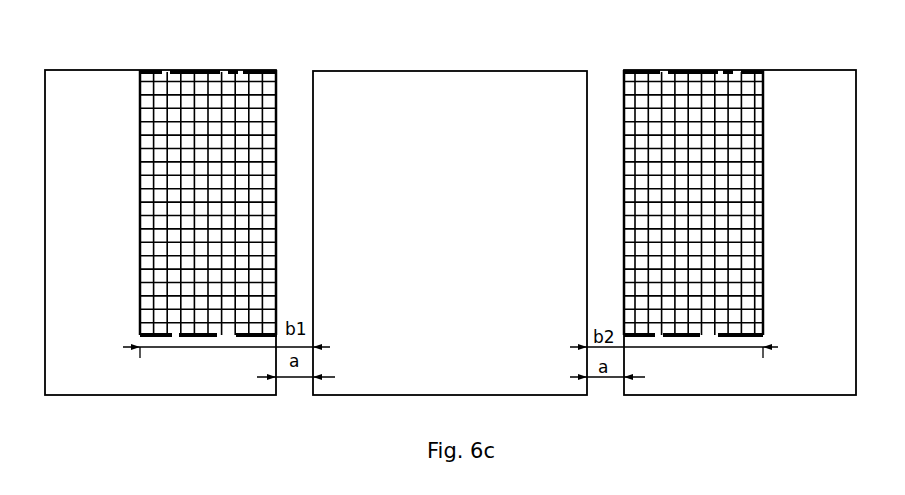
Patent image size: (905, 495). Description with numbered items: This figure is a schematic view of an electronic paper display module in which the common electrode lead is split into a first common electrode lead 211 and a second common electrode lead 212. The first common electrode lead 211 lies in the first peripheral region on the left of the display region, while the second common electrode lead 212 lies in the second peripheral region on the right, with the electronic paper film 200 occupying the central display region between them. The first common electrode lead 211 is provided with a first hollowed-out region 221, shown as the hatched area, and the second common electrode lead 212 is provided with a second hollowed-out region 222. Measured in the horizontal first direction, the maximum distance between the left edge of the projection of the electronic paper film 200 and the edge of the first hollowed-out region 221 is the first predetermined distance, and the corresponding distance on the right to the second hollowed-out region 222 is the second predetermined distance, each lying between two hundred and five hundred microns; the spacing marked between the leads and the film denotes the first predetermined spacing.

The electronic paper film 200 is at (463, 85).
The first common electrode lead 211 is at (72, 85).
The second common electrode lead 212 is at (828, 84).
The first hollowed-out region 221 is at (185, 66).
The second hollowed-out region 222 is at (715, 68).